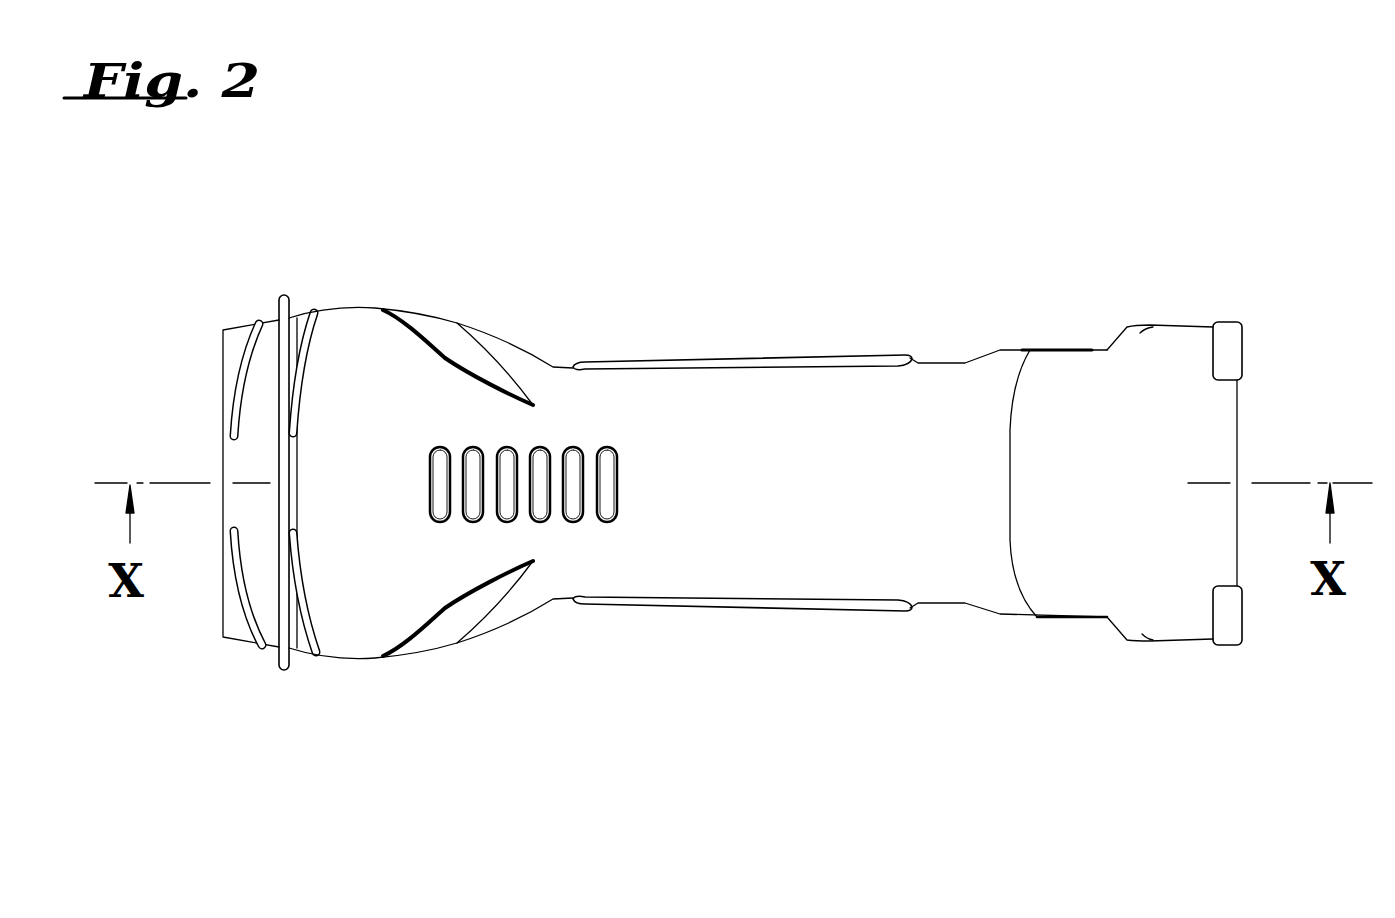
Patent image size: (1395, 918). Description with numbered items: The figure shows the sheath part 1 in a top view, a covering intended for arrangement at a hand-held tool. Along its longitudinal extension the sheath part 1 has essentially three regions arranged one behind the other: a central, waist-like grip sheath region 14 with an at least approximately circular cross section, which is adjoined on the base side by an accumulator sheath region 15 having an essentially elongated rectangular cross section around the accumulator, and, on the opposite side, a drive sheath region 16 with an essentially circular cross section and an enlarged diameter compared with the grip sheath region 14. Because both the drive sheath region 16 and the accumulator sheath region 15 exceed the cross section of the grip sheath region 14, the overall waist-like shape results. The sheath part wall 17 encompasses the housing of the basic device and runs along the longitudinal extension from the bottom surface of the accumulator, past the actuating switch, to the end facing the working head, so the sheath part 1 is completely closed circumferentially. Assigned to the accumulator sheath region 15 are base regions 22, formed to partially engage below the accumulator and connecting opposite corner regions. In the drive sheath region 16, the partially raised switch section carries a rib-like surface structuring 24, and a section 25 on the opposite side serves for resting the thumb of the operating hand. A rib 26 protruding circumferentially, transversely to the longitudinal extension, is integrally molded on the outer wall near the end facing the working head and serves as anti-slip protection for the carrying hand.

The sheath part 1 is at (874, 218).
The grip sheath region 14 is at (763, 493).
The accumulator sheath region 15 is at (1128, 545).
The drive sheath region 16 is at (368, 547).
The sheath part wall 17 is at (703, 364).
The base regions 22 is at (1243, 352).
The rib-like surface structuring 24 is at (473, 495).
The section 25 is at (523, 495).
The rib 26 is at (289, 316).